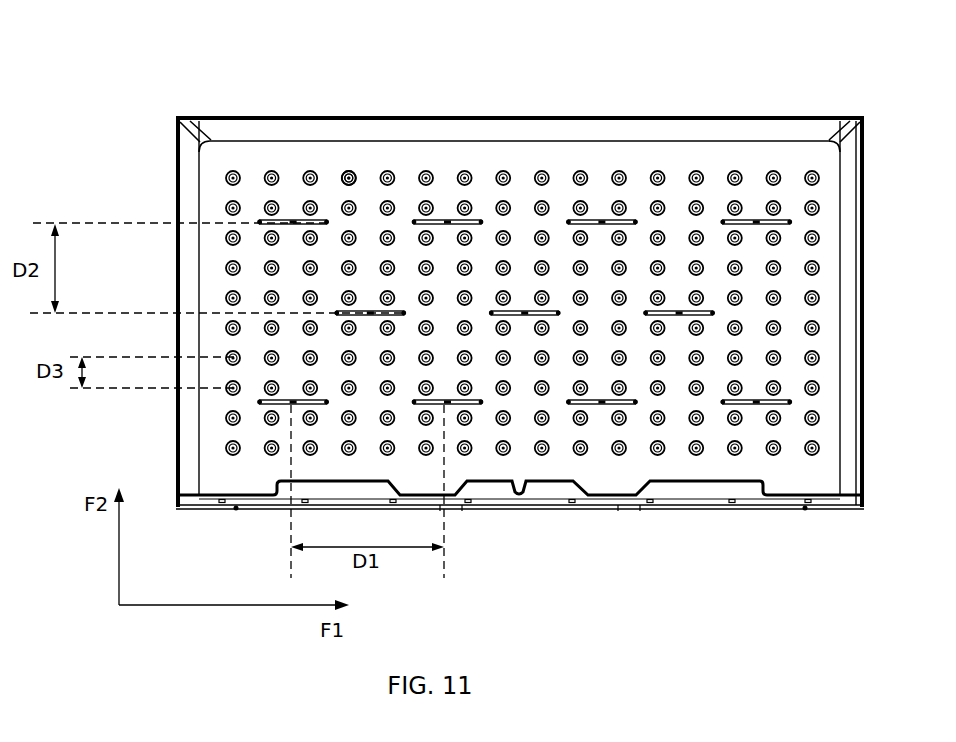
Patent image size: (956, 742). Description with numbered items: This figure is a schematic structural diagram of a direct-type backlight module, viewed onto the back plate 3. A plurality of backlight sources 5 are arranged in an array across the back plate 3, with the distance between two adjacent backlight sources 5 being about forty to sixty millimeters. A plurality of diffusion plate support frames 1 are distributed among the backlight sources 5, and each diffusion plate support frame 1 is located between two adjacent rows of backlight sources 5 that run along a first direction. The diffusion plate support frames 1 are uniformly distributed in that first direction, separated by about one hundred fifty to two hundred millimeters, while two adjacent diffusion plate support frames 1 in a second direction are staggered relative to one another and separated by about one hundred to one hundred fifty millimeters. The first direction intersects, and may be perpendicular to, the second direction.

The diffusion plate support frame 1 is at (481, 220).
The back plate 3 is at (559, 160).
The backlight source 5 is at (350, 176).